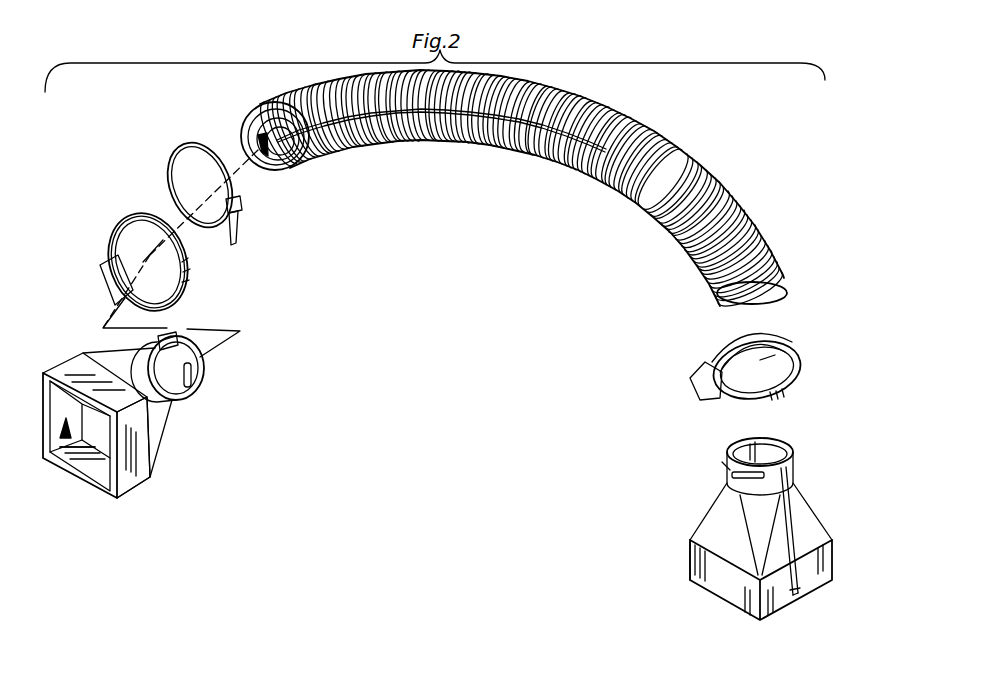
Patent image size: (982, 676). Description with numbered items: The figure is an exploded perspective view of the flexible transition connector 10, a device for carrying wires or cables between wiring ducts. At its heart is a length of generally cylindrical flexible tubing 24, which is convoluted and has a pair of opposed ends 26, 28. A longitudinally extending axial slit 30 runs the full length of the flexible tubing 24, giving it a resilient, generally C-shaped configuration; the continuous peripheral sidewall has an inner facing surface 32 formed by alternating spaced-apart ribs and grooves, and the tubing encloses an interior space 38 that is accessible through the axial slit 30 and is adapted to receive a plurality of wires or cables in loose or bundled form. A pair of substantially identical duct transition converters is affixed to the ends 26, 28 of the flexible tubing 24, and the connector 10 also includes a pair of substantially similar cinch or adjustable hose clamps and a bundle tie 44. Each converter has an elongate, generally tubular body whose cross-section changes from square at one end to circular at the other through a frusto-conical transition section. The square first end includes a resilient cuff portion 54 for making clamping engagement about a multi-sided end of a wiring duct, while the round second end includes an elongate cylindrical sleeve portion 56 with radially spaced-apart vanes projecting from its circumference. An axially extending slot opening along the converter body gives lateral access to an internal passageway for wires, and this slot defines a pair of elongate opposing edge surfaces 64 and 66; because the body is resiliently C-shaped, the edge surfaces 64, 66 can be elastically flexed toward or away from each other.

The flexible transition connector 10 is at (766, 162).
The flexible tubing 24 is at (772, 136).
The first end of tubing 26 is at (286, 172).
The second end of tubing 28 is at (780, 300).
The axial slit 30 is at (477, 153).
The inner facing surface 32 is at (263, 155).
The interior space 38 is at (262, 137).
The bundle tie 44 is at (190, 141).
The cuff portion 54 is at (63, 440).
The sleeve portion 56 is at (200, 405).
The first edge surface 64 is at (795, 600).
The second edge surface 66 is at (805, 592).